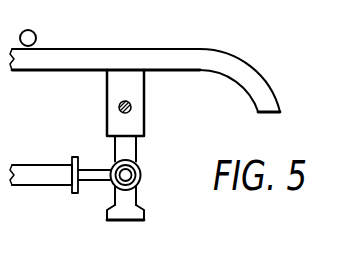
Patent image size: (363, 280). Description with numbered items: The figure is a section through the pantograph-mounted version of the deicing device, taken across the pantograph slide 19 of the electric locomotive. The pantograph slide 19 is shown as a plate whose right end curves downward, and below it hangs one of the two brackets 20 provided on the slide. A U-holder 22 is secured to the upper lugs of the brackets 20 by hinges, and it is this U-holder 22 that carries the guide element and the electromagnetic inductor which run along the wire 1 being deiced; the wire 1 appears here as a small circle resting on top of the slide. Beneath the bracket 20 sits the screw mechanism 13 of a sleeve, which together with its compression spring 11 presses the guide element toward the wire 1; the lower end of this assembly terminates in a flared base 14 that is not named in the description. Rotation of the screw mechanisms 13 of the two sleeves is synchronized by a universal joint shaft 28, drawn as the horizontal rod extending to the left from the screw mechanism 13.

The wire 1 is at (35, 33).
The compression spring 11 is at (137, 180).
The screw mechanism 13 is at (112, 185).
The base flange 14 is at (133, 217).
The pantograph slide 19 is at (208, 53).
The brackets 20 is at (112, 89).
The U-holder 22 is at (131, 107).
The universal joint shaft 28 is at (43, 180).